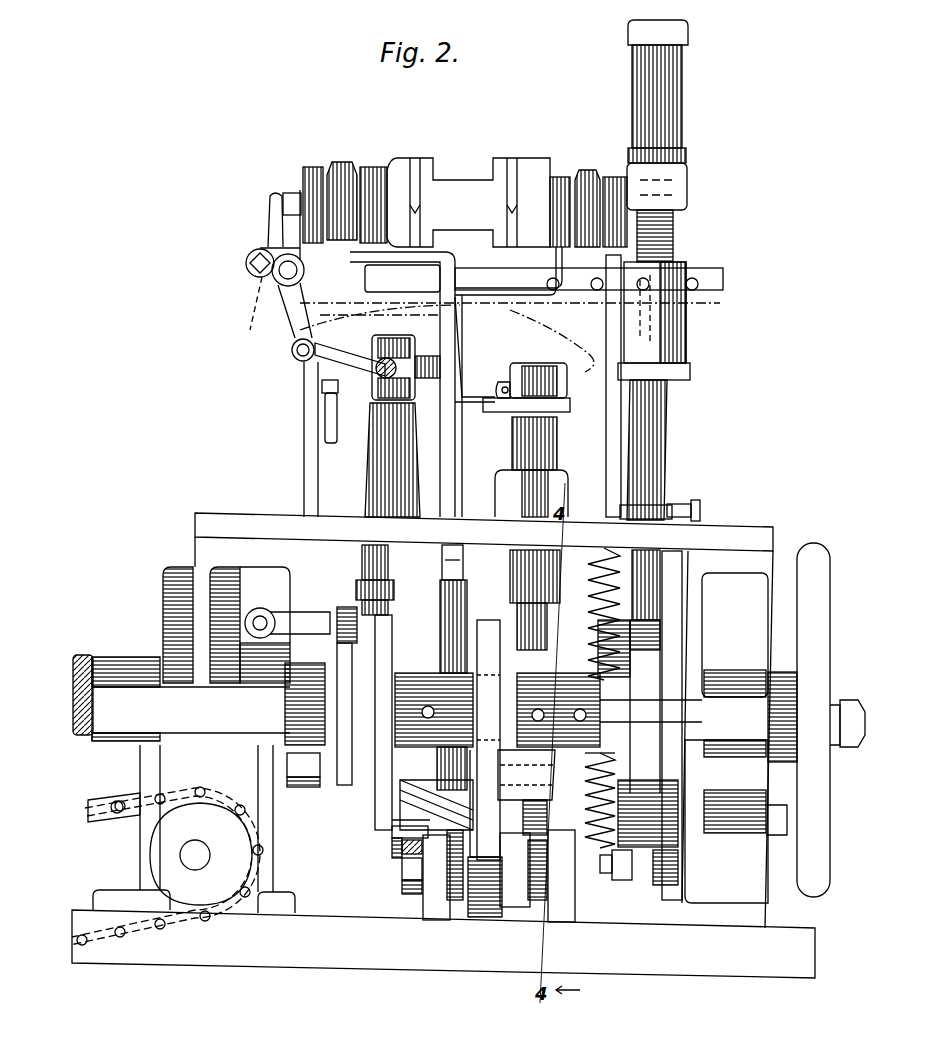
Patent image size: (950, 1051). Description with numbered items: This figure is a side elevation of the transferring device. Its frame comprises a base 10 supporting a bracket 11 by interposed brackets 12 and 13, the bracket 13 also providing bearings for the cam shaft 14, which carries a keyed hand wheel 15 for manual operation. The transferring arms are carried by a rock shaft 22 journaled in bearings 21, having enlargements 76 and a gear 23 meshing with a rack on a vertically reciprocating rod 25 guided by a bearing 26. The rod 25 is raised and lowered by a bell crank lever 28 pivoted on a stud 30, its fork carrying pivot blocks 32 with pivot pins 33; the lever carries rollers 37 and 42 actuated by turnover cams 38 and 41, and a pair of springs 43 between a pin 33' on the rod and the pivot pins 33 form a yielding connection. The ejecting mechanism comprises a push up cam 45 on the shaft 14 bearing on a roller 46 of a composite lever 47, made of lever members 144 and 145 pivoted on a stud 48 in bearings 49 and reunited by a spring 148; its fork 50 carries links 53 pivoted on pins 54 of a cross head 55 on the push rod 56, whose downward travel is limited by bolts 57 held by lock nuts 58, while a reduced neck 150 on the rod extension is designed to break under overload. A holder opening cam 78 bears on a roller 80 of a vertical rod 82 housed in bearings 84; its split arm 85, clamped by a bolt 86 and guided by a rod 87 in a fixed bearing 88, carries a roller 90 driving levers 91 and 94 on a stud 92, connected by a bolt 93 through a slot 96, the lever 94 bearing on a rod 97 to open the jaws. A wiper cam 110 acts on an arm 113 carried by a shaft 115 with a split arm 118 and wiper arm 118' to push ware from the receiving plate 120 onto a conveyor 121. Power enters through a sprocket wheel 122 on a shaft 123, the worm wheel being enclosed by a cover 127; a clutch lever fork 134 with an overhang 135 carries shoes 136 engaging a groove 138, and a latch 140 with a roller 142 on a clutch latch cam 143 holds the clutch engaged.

The base 10 is at (805, 970).
The bracket 11 is at (770, 525).
The bracket 12 is at (280, 898).
The bracket 13 is at (735, 903).
The cam shaft 14 is at (330, 705).
The hand wheel 15 is at (825, 553).
The bearings 21 is at (365, 210).
The rock shaft 22 is at (302, 190).
The gear 23 is at (673, 240).
The vertically reciprocating rod 25 is at (668, 410).
The bearing 26 is at (690, 345).
The bell crank lever 28 is at (670, 700).
The stud 30 is at (595, 798).
The pivot blocks 32 is at (620, 880).
The pivot pins 33 is at (596, 877).
The pin 33' is at (703, 500).
The roller 37 is at (660, 640).
The turnover cam 38 is at (605, 700).
The turnover cam 41 is at (700, 722).
The roller 42 is at (660, 887).
The springs 43 is at (596, 575).
The push up cam 45 is at (490, 765).
The roller 46 is at (485, 918).
The composite lever 47 is at (512, 912).
The stud 48 is at (402, 870).
The bearings 49 is at (437, 910).
The fork 50 is at (425, 782).
The links 53 is at (380, 805).
The pins 54 is at (392, 848).
The cross head 55 is at (402, 852).
The push rod 56 is at (440, 640).
The bolts 57 is at (402, 888).
The lock nuts 58 is at (392, 832).
The enlargements 76 is at (462, 185).
The holder opening cam 78 is at (392, 823).
The roller 80 is at (357, 588).
The vertical rod 82 is at (362, 560).
The bearings 84 is at (370, 465).
The split arm 85 is at (380, 415).
The bolt 86 is at (376, 385).
The rod 87 is at (325, 416).
The fixed bearing 88 is at (322, 386).
The roller 90 is at (292, 358).
The lever 91 is at (280, 318).
The stud 92 is at (280, 285).
The bolt 93 is at (250, 252).
The lever 94 is at (268, 207).
The slot 96 is at (248, 266).
The rod 97 is at (292, 193).
The wiper cam 110 is at (545, 757).
The arm 113 is at (552, 622).
The shaft 115 is at (555, 497).
The split arm 118 is at (544, 387).
The wiper arm 118' is at (386, 384).
The receiving plate 120 is at (478, 270).
The conveyor 121 is at (710, 270).
The sprocket wheel 122 is at (138, 852).
The shaft 123 is at (180, 852).
The cover 127 is at (165, 610).
The fork 134 is at (290, 787).
The overhang 135 is at (300, 612).
The shoes 136 is at (302, 777).
The groove 138 is at (325, 718).
The latch 140 is at (330, 612).
The roller 142 is at (350, 608).
The clutch latch cam 143 is at (342, 787).
The lever member 144 is at (500, 845).
The lever member 145 is at (477, 808).
The spring 148 is at (548, 815).
The reduced neck 150 is at (463, 560).